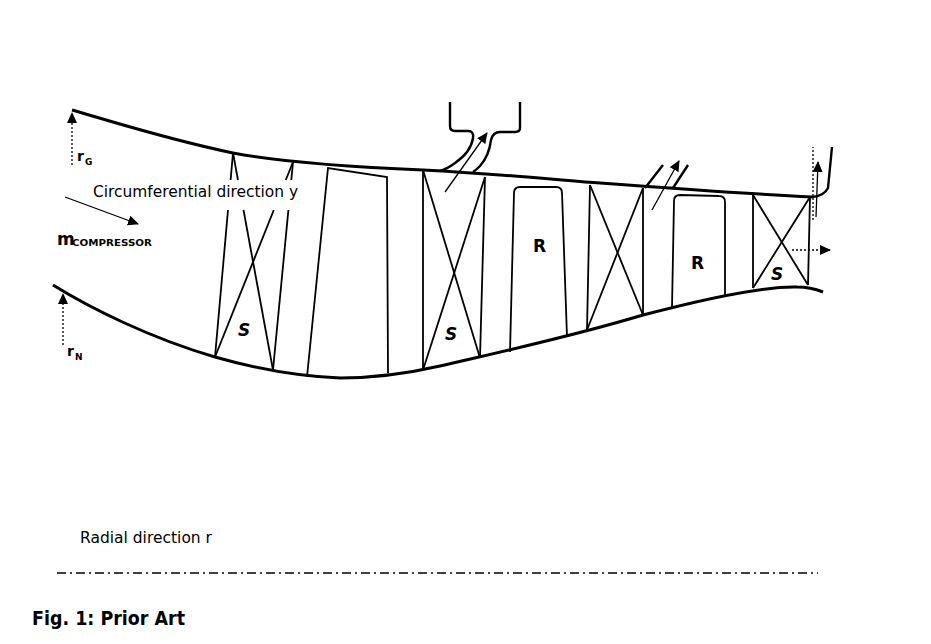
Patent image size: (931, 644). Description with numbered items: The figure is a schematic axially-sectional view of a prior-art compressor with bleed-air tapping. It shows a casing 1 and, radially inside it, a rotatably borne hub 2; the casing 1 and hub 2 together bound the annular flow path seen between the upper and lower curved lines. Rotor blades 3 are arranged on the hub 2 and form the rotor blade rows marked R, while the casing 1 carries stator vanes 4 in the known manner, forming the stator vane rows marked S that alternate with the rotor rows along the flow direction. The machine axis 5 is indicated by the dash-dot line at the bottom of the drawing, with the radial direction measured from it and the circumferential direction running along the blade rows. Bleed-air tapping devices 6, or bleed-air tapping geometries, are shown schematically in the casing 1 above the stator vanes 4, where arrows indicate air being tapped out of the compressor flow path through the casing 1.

The casing 1 is at (175, 138).
The hub 2 is at (165, 348).
The rotor blade 3 is at (343, 368).
The stator vane 4 is at (617, 317).
The machine axis 5 is at (437, 560).
The bleed-air tapping device 6 is at (507, 117).